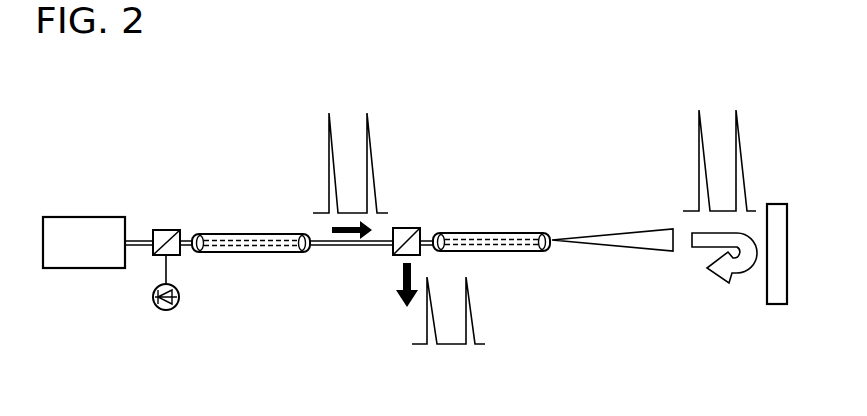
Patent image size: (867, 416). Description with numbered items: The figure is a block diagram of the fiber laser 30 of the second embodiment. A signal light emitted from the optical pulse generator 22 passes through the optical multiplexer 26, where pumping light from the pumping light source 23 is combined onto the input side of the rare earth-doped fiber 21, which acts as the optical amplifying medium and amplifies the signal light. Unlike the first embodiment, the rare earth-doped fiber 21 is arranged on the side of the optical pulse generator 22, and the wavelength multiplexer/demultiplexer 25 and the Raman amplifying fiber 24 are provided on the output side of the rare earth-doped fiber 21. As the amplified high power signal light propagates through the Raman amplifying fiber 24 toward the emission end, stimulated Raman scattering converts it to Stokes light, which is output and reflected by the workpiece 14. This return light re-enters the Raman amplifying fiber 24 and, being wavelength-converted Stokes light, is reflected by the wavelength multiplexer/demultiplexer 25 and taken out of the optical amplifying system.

The optical pulse generator 22 is at (85, 217).
The optical multiplexer 26 is at (165, 230).
The rare earth-doped fiber 21 is at (247, 234).
The wavelength multiplexer/demultiplexer 25 is at (403, 228).
The Raman amplifying fiber 24 is at (490, 233).
The pumping light source 23 is at (180, 303).
The fiber laser 30 is at (465, 166).
The workpiece 14 is at (775, 304).